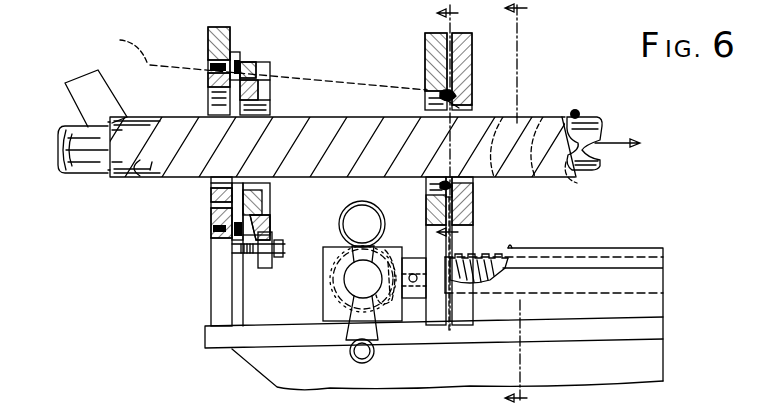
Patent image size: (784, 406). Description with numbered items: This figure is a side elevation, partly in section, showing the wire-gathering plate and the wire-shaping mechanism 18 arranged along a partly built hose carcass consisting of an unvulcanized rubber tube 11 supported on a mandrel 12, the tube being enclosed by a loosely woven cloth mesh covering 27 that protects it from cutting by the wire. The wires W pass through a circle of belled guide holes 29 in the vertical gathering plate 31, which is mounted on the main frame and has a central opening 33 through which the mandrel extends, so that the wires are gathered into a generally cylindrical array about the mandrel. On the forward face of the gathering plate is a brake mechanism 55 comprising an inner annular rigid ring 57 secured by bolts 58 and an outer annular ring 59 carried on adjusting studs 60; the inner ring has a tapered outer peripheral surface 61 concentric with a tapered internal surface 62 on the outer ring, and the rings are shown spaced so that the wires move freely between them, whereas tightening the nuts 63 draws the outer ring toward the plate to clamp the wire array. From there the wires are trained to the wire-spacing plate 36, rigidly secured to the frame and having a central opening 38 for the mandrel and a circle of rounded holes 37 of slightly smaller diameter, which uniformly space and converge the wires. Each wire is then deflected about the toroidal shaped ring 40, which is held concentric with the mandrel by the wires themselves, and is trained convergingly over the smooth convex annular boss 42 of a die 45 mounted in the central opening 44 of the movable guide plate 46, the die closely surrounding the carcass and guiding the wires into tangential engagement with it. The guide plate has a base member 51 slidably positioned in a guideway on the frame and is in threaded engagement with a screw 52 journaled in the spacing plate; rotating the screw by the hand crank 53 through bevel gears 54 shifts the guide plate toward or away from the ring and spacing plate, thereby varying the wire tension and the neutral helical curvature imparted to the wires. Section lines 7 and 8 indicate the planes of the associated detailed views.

The section line 7— 7 is at (524, 203).
The section line 8— 8 is at (464, 167).
The unvulcanized rubber tube 11 is at (118, 176).
The mandrel 12 is at (78, 152).
The wire-shaping mechanism 18 is at (332, 35).
The cloth mesh covering 27 is at (90, 78).
The guide holes 29 is at (210, 66).
The gathering plate 31 is at (212, 28).
The central opening 33 is at (214, 196).
The wire-spacing plate 36 is at (460, 323).
The holes 37 is at (428, 205).
The central opening 38 is at (442, 186).
The toroidal shaped ring 40 is at (472, 205).
The annular boss 42 is at (458, 100).
The central opening 44 is at (465, 185).
The die 45 is at (464, 86).
The guide plate 46 is at (462, 245).
The base member 51 is at (652, 303).
The screw 52 is at (490, 274).
The hand crank 53 is at (354, 356).
The bevel gears 54 is at (386, 246).
The brake mechanism 55 is at (272, 82).
The inner annular rigid ring 57 is at (262, 70).
The bolts 58 is at (236, 58).
The outer annular ring 59 is at (246, 62).
The adjusting studs 60 is at (284, 246).
The outer peripheral surface 61 is at (268, 218).
The internal surface 62 is at (264, 200).
The nuts 63 is at (274, 258).
The wires W is at (349, 112).